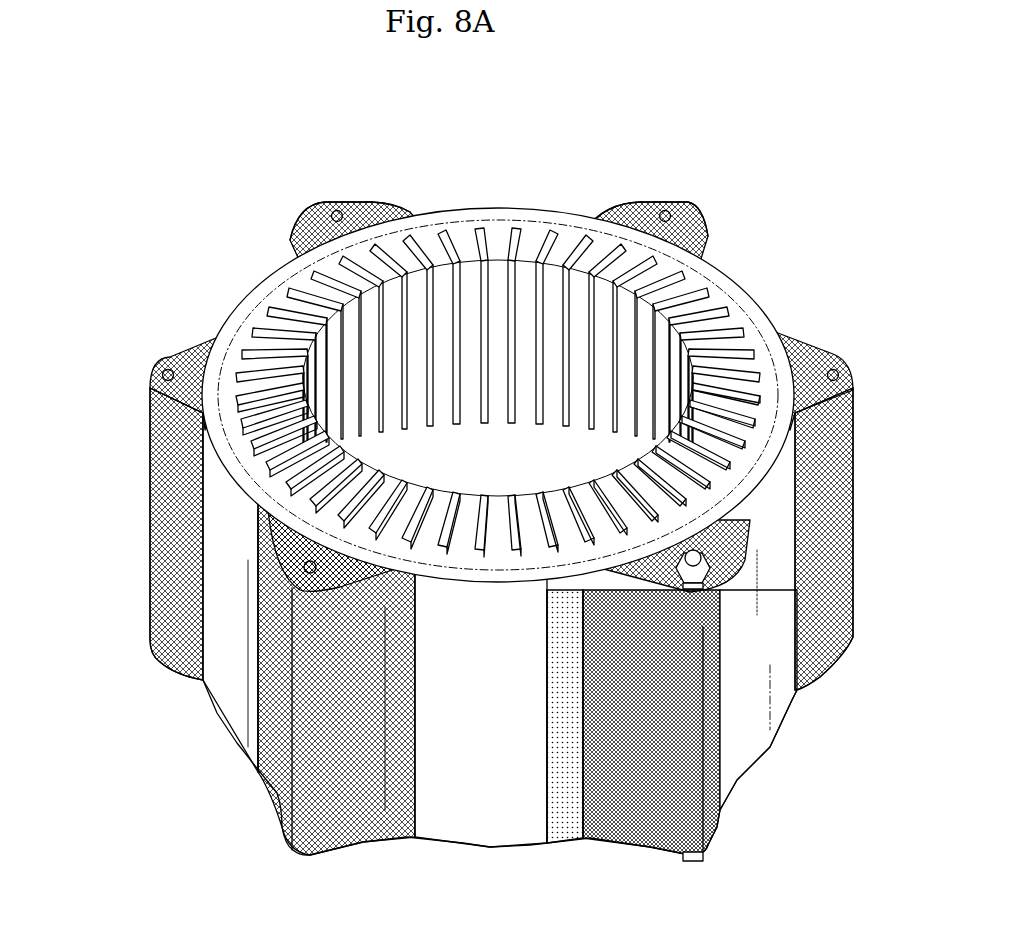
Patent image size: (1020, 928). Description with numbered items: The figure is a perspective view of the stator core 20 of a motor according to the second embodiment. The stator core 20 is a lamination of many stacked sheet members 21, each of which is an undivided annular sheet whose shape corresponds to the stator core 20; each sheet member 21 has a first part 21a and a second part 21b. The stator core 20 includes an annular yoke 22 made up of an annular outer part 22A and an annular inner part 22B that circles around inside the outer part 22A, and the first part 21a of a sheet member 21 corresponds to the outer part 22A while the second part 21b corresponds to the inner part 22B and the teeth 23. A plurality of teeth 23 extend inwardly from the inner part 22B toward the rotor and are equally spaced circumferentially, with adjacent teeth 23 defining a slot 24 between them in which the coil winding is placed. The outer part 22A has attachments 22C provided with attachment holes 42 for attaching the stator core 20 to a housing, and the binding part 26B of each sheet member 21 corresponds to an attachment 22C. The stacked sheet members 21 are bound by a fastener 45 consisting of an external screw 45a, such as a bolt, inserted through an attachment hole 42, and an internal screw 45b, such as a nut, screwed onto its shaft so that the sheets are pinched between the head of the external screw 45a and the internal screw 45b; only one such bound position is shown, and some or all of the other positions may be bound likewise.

The stator core 20 is at (141, 169).
The sheet member 21 is at (62, 448).
The first part 21a is at (233, 428).
The second part 21b is at (238, 400).
The yoke 22 is at (548, 105).
The outer part 22A is at (472, 215).
The inner part 22B is at (521, 245).
The attachment 22C is at (192, 353).
The tooth 23 is at (305, 300).
The slot 24 is at (486, 497).
The binding part 26B is at (355, 207).
The attachment hole 42 is at (339, 211).
The fastener 45 is at (783, 721).
The external screw 45a is at (742, 872).
The internal screw 45b is at (706, 582).